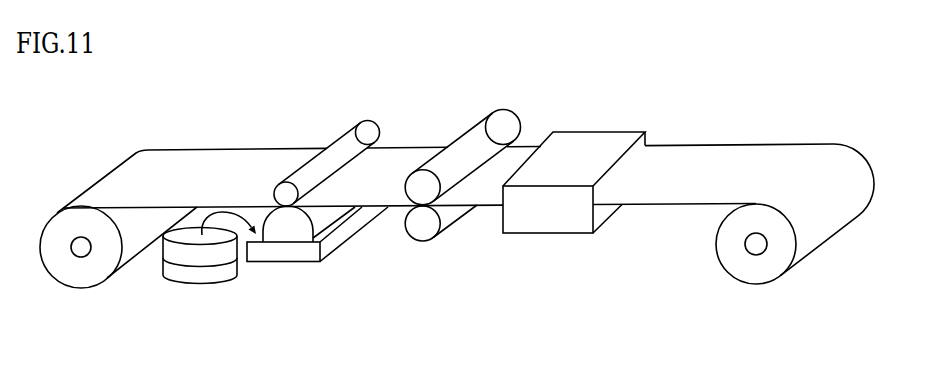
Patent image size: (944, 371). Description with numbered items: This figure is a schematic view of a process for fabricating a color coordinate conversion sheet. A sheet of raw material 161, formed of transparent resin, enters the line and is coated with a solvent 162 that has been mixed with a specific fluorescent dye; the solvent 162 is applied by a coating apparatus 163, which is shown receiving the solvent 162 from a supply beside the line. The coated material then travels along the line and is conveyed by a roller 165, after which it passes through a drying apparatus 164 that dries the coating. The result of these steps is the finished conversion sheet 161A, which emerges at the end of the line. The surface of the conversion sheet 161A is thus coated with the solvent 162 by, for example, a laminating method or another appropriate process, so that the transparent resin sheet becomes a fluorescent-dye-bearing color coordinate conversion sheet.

The sheet of raw material 161 is at (82, 277).
The conversion sheet 161A is at (758, 270).
The solvent 162 is at (195, 282).
The coating apparatus 163 is at (288, 233).
The drying apparatus 164 is at (543, 215).
The roller 165 is at (420, 232).